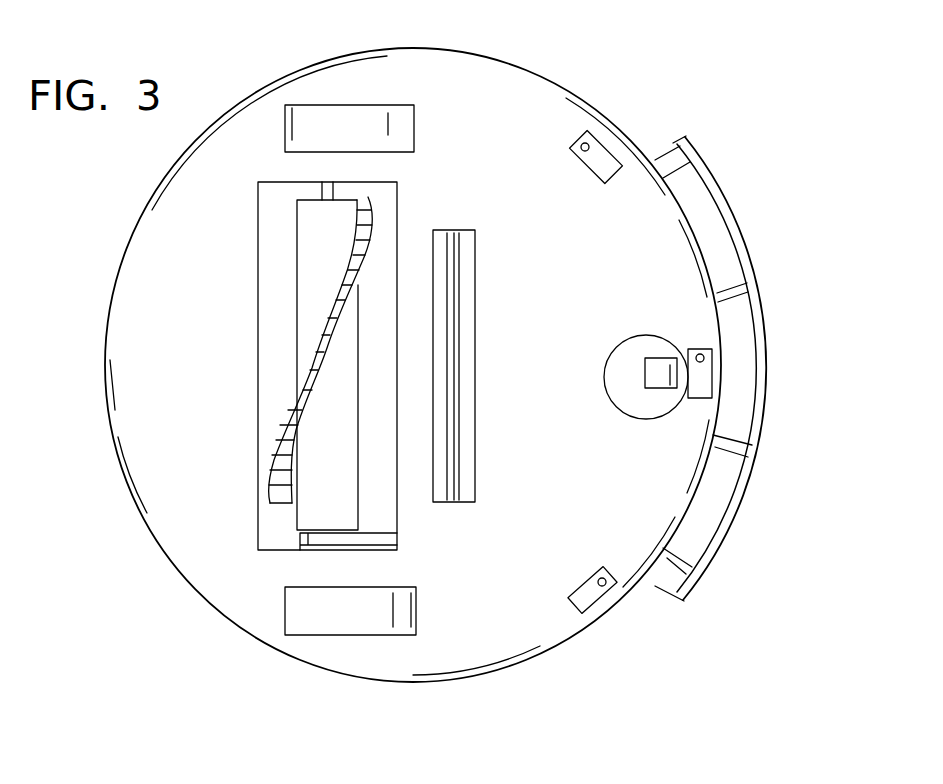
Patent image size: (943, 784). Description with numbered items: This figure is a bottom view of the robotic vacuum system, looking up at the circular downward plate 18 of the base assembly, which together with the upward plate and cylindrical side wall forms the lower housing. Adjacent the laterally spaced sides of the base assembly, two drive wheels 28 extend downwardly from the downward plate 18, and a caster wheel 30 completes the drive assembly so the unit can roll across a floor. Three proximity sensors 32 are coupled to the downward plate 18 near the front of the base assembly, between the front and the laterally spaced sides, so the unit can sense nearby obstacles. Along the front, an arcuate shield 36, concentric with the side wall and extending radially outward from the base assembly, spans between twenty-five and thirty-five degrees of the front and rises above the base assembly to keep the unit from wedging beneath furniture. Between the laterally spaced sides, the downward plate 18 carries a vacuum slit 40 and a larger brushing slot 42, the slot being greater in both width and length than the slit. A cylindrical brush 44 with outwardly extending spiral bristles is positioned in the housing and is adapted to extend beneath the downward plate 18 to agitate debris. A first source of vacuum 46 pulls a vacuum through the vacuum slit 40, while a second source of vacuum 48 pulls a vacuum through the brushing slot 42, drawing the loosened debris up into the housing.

The downward plate 18 is at (529, 488).
The drive wheels 28 is at (343, 121).
The caster wheel 30 is at (644, 345).
The proximity sensors 32 is at (606, 150).
The shield 36 is at (770, 370).
The vacuum slit 40 is at (452, 230).
The brushing slot 42 is at (278, 228).
The brush 44 is at (322, 343).
The first source of vacuum 46 is at (273, 377).
The second source of vacuum 48 is at (467, 348).